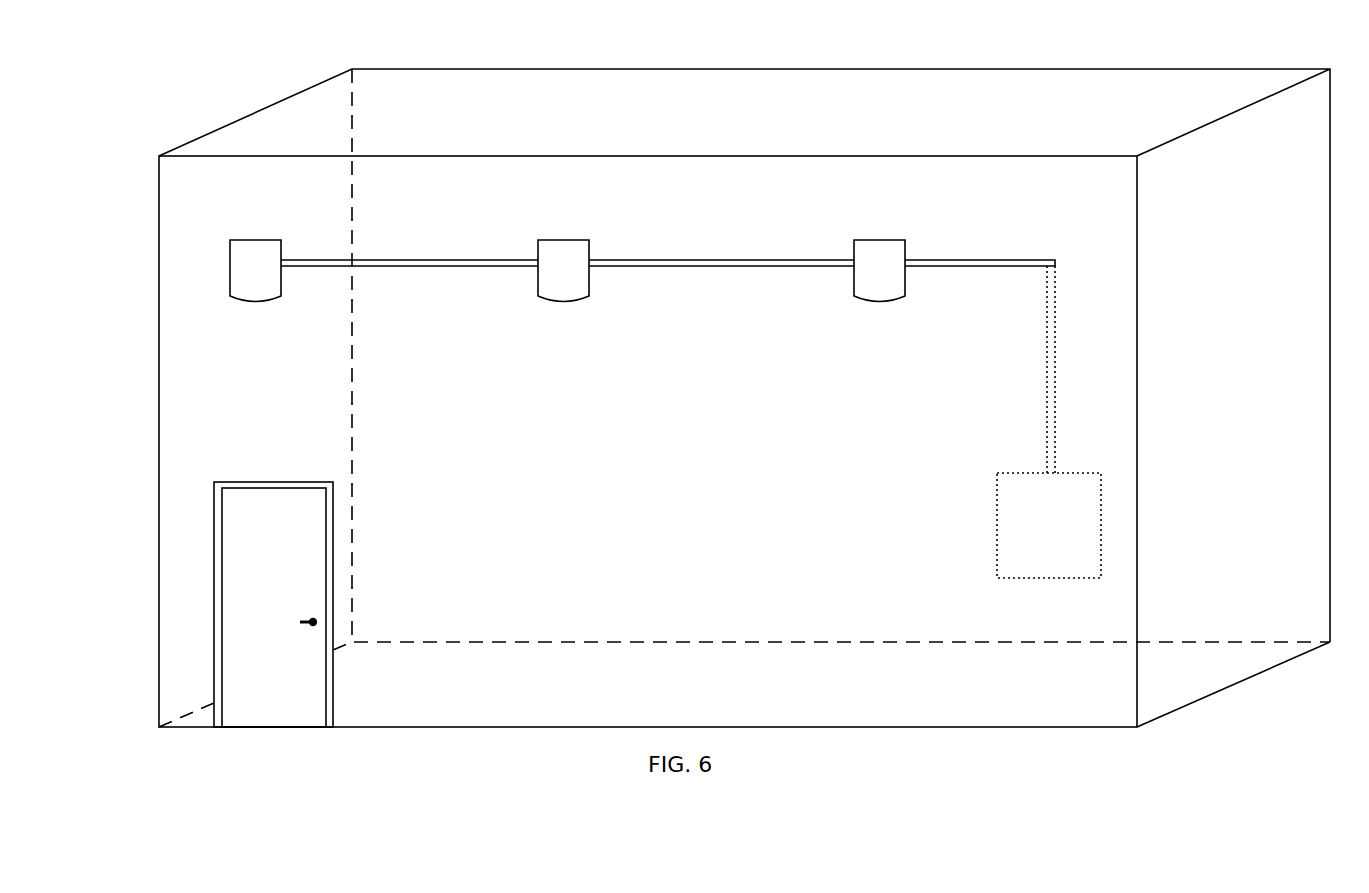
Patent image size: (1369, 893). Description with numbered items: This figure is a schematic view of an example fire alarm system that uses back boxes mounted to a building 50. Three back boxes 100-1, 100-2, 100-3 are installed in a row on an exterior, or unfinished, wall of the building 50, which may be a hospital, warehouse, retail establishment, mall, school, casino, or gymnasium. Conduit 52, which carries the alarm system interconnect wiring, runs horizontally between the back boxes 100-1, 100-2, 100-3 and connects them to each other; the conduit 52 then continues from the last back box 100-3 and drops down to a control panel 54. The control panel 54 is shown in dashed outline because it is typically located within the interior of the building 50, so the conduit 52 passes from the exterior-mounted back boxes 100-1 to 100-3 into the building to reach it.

The building 50 is at (270, 104).
The conduit 52 is at (450, 260).
The control panel 54 is at (997, 478).
The back box 100-1 is at (254, 240).
The back box 100-2 is at (567, 239).
The back box 100-3 is at (879, 239).